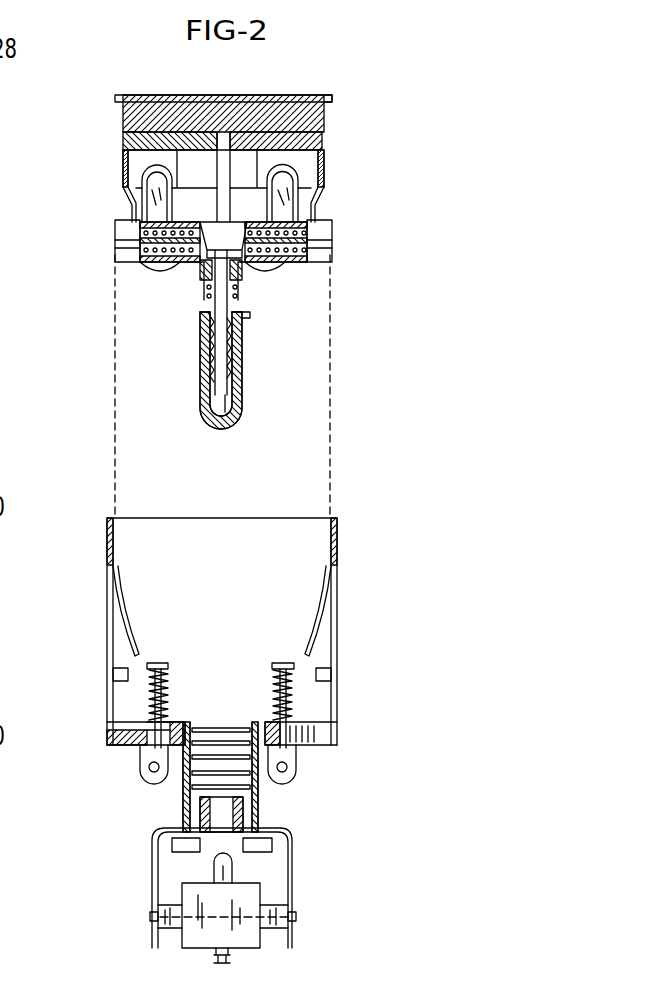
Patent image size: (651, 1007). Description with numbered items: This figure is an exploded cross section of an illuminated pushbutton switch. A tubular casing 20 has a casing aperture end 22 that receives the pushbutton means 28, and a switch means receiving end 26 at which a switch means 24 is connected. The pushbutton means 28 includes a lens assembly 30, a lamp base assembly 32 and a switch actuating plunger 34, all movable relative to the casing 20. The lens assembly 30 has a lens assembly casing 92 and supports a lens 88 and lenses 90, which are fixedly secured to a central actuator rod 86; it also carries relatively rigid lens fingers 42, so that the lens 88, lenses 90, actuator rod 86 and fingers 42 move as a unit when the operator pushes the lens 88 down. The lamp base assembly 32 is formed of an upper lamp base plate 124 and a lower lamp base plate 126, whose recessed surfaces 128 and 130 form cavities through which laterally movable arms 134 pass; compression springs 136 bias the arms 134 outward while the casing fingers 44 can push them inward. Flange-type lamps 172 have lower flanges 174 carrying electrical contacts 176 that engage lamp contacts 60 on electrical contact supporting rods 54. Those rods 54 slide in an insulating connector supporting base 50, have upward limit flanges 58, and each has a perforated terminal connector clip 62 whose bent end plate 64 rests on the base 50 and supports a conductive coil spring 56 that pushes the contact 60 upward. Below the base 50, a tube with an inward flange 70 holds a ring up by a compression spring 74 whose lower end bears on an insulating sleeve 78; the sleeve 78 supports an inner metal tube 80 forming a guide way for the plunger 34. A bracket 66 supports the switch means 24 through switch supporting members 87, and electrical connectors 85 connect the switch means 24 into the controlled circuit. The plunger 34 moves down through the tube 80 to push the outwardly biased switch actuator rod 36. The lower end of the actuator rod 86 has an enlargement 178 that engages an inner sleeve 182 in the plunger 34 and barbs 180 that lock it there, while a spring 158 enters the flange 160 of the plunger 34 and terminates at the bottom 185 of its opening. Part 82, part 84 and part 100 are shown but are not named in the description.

The casing 20 is at (96, 565).
The casing aperture end 22 is at (128, 503).
The switch means 24 is at (200, 936).
The switch means receiving end 26 is at (312, 792).
The pushbutton means 28 is at (324, 150).
The lens assembly 30 is at (326, 86).
The lamp base assembly 32 is at (98, 252).
The switch actuating plunger 34 is at (238, 400).
The switch actuator rod 36 is at (228, 872).
The lens fingers 42 is at (124, 190).
The casing fingers 44 is at (134, 606).
The connector supporting base 50 is at (316, 750).
The electrical contact supporting rods 54 is at (164, 694).
The coil spring 56 is at (165, 672).
The upward limit flanges 58 is at (152, 750).
The lamp contacts 60 is at (158, 663).
The terminal connector clip 62 is at (156, 772).
The spring supporting bent end plate 64 is at (170, 722).
The bracket 66 is at (292, 884).
The inward flange 70 is at (250, 722).
The compression spring 74 is at (200, 786).
The insulating sleeve 78 is at (262, 808).
The inner metal tube 80 is at (210, 842).
The housing wall 82 is at (110, 628).
The tab 84 is at (114, 674).
The electrical connectors 85 is at (226, 966).
The actuator rod 86 is at (220, 306).
The switch supporting members 87 is at (168, 932).
The lens 88 is at (174, 96).
The lenses 90 is at (136, 136).
The lens assembly casing 92 is at (320, 206).
The cap lip 100 is at (336, 88).
The upper lamp base plate 124 is at (140, 223).
The lower lamp base plate 126 is at (150, 264).
The recessed surface 128 is at (186, 222).
The recessed surface 130 is at (158, 272).
The laterally movable arms 134 is at (140, 240).
The compression springs 136 is at (145, 262).
The spring 158 is at (212, 366).
The flange 160 is at (210, 326).
The lamps 172 is at (145, 181).
The lower flanges 174 is at (140, 262).
The electrical contacts 176 is at (160, 264).
The enlargement 178 is at (234, 348).
The barbs 180 is at (208, 410).
The inner sleeve 182 is at (236, 378).
The bottom of plunger opening 185 is at (238, 400).